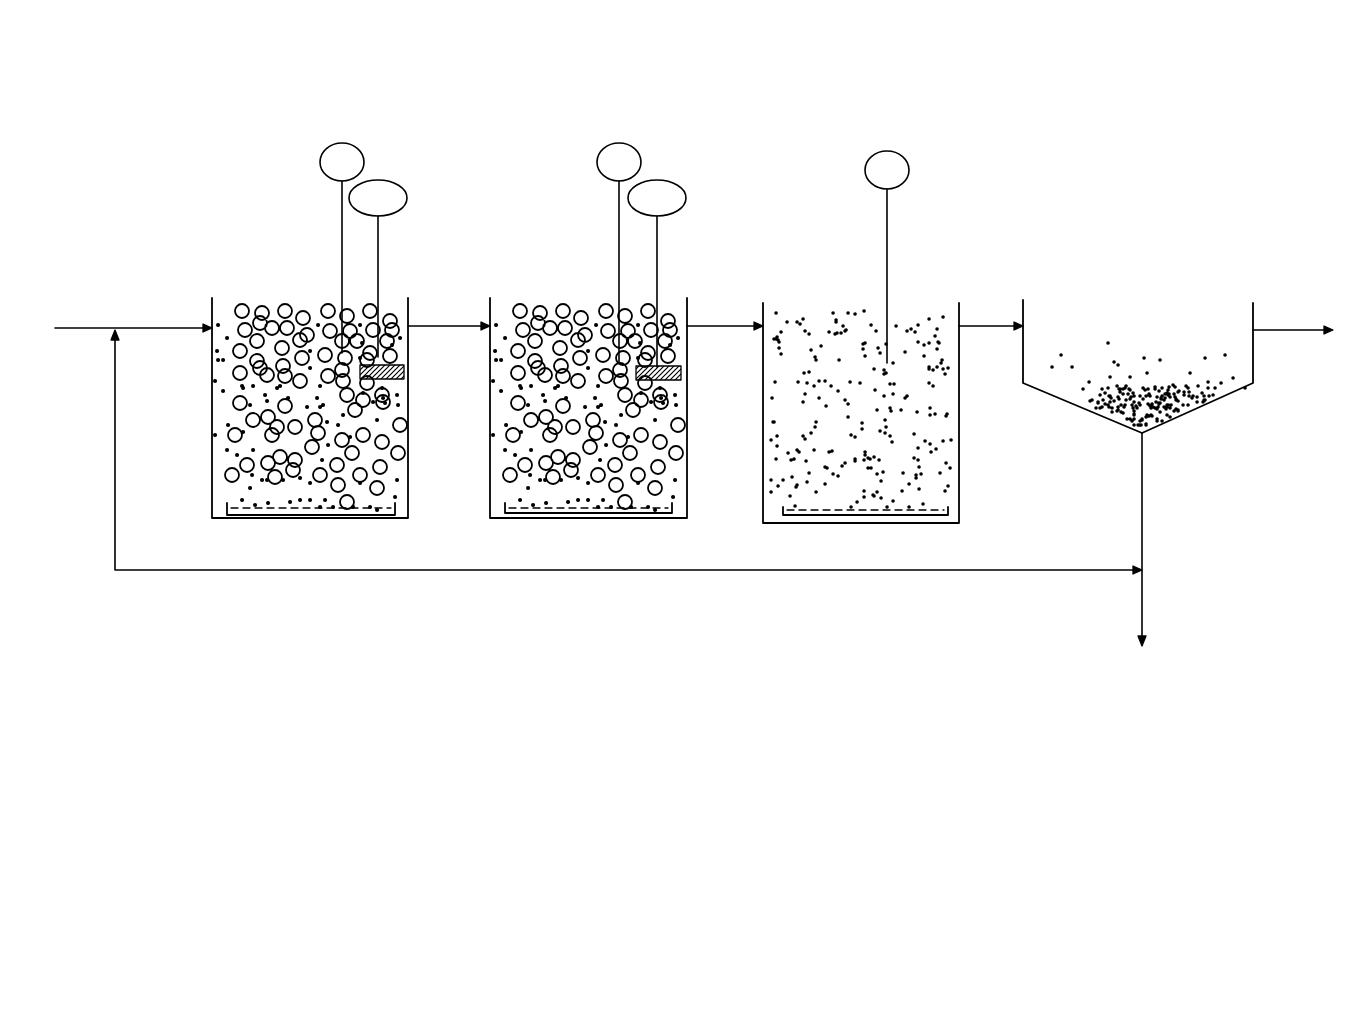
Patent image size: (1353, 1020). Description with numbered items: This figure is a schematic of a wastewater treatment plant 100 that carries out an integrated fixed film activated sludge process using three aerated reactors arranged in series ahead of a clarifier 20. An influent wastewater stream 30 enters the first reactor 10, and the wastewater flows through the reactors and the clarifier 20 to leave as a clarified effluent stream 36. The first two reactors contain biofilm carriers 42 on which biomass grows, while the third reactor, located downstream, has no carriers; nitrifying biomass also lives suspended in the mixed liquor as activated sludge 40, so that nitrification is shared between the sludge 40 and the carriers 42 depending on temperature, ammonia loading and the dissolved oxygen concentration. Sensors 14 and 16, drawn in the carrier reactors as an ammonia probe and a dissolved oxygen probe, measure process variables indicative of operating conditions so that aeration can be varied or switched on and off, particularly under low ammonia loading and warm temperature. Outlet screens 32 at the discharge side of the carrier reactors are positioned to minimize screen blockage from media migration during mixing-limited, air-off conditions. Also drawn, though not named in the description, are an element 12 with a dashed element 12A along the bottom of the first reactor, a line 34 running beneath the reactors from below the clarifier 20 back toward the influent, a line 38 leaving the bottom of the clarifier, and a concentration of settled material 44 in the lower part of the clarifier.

The wastewater treatment plant 100 is at (1218, 124).
The reactor 10 is at (212, 308).
The aeration diffuser 12 is at (249, 519).
The diffuser membrane 12A is at (283, 507).
The sensor 14 is at (407, 199).
The sensor 16 is at (365, 158).
The clarifier 20 is at (1253, 306).
The influent wastewater stream 30 is at (56, 327).
The outlet screen 32 is at (407, 377).
The return activated sludge line 34 is at (507, 570).
The clarified effluent stream 36 is at (1308, 330).
The waste sludge line 38 is at (1142, 615).
The activated sludge 40 is at (263, 398).
The biofilm carriers 42 is at (327, 310).
The settled sludge 44 is at (1170, 418).